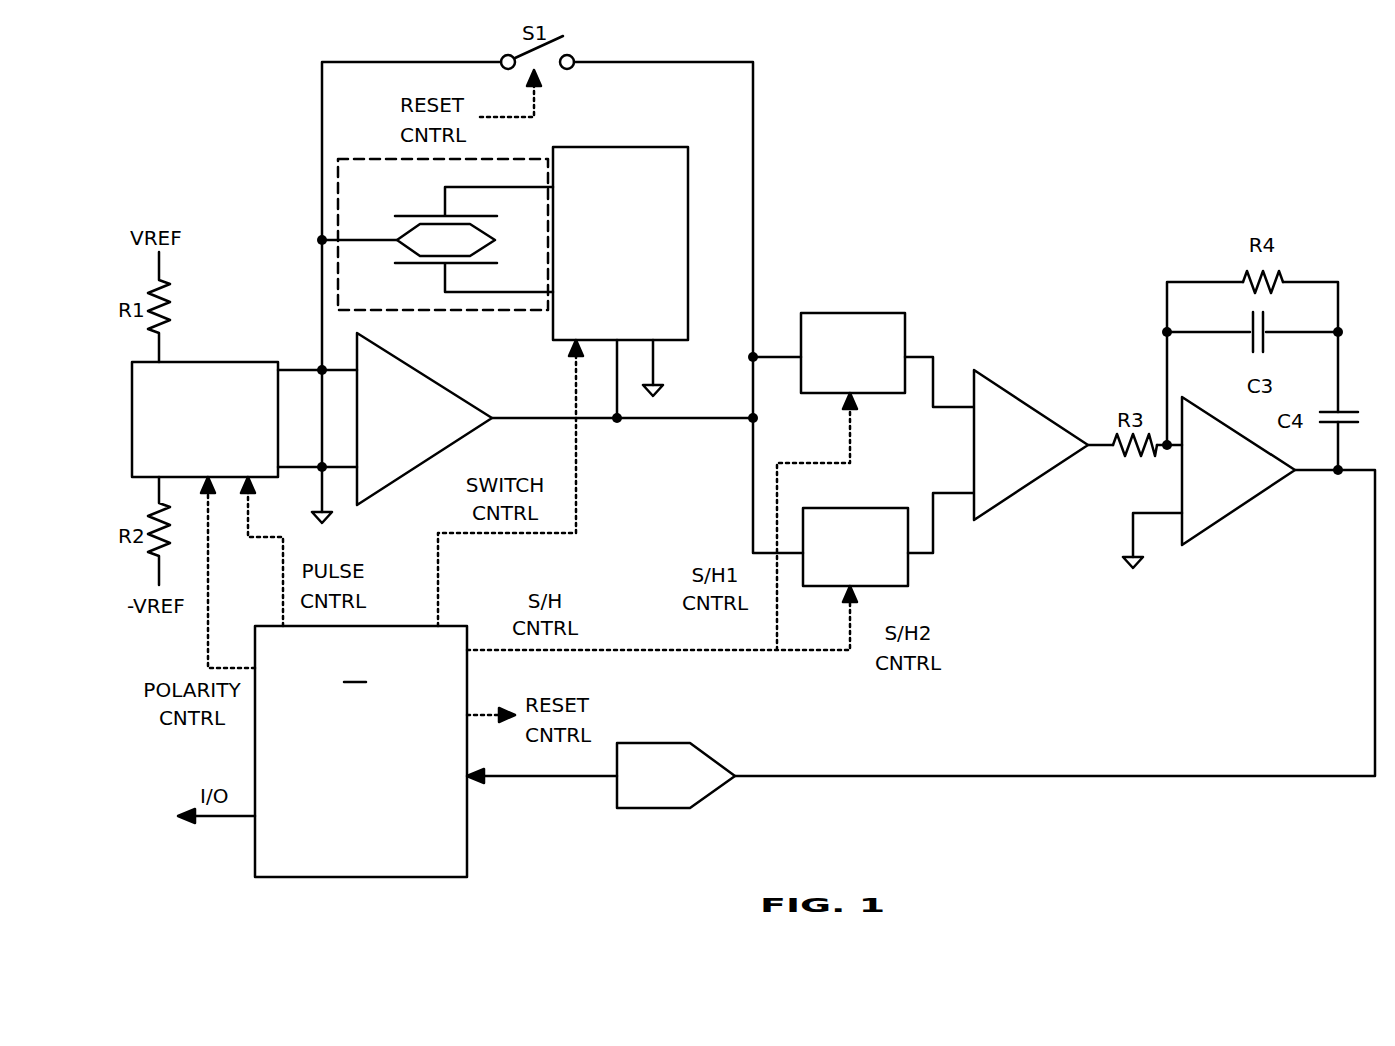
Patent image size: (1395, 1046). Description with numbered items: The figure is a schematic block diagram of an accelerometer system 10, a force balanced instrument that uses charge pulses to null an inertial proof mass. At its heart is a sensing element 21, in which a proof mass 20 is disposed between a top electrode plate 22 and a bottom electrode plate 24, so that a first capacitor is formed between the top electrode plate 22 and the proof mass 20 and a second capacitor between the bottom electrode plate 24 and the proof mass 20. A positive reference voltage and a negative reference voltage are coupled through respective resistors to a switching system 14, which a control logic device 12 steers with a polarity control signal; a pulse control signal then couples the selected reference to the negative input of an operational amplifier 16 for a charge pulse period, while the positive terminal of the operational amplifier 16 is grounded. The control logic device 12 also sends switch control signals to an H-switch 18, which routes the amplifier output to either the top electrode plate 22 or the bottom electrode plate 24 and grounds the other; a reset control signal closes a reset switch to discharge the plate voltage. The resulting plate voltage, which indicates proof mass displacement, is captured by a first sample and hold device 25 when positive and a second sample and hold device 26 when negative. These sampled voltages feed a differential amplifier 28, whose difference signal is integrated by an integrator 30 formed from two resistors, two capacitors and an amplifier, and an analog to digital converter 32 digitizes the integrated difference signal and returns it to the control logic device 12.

The accelerometer system 10 is at (1160, 102).
The control logic device 12 is at (361, 751).
The switching system 14 is at (222, 362).
The operational amplifier 16 is at (424, 372).
The H-switch 18 is at (612, 147).
The proof mass 20 is at (490, 226).
The sensing element 21 is at (388, 159).
The top electrode plate 22 is at (405, 215).
The bottom electrode plate 24 is at (408, 264).
The first sample and hold device 25 is at (850, 313).
The second sample and hold device 26 is at (857, 508).
The differential amplifier 28 is at (1028, 403).
The integrator 30 is at (1232, 515).
The analog to digital converter 32 is at (672, 743).